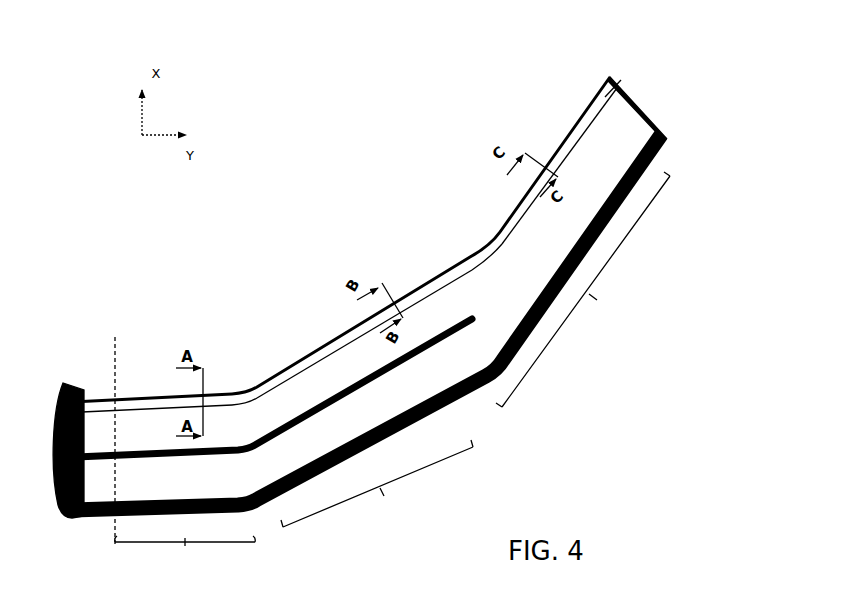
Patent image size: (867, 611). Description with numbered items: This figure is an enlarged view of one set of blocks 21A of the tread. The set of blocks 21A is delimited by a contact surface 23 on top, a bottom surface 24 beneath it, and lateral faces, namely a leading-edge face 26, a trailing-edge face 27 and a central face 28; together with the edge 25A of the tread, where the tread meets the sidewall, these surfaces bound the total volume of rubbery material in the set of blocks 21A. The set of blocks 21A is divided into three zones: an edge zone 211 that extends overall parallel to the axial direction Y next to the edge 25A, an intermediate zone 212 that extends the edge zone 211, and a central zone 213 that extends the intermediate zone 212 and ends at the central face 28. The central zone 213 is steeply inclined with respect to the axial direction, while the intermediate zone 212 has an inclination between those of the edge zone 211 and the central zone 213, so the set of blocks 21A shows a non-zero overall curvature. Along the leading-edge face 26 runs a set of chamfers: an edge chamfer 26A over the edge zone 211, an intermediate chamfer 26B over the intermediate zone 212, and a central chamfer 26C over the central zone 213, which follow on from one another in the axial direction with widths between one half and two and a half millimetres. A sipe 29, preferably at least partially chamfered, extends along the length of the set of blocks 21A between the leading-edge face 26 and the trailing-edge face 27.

The set of blocks 21A is at (343, 131).
The contact surface 23 is at (447, 304).
The bottom surface 24 is at (293, 357).
The edge 25A is at (113, 368).
The leading-edge face 26 is at (467, 258).
The edge chamfer 26A is at (228, 394).
The intermediate chamfer 26B is at (420, 280).
The central chamfer 26C is at (553, 150).
The trailing-edge face 27 is at (455, 405).
The central face 28 is at (622, 86).
The sipe 29 is at (343, 383).
The edge zone 211 is at (185, 559).
The intermediate zone 212 is at (377, 487).
The central zone 213 is at (583, 289).